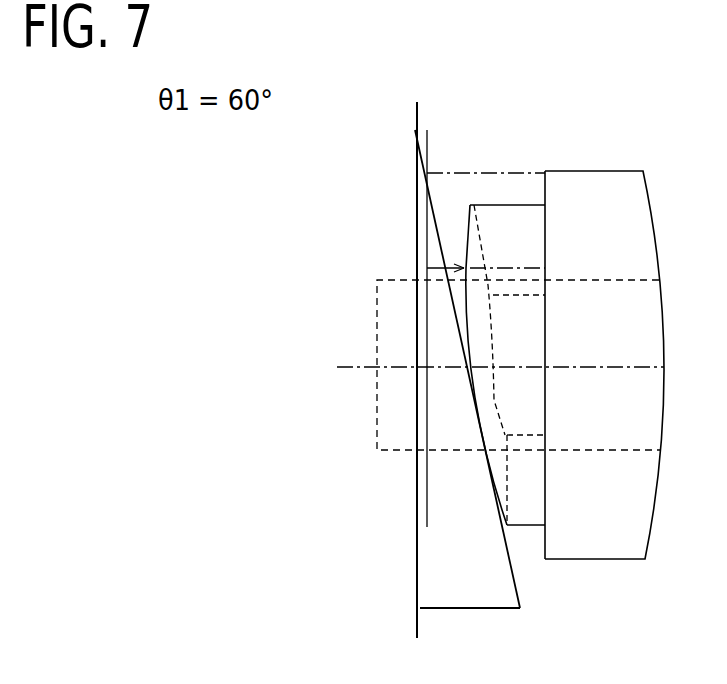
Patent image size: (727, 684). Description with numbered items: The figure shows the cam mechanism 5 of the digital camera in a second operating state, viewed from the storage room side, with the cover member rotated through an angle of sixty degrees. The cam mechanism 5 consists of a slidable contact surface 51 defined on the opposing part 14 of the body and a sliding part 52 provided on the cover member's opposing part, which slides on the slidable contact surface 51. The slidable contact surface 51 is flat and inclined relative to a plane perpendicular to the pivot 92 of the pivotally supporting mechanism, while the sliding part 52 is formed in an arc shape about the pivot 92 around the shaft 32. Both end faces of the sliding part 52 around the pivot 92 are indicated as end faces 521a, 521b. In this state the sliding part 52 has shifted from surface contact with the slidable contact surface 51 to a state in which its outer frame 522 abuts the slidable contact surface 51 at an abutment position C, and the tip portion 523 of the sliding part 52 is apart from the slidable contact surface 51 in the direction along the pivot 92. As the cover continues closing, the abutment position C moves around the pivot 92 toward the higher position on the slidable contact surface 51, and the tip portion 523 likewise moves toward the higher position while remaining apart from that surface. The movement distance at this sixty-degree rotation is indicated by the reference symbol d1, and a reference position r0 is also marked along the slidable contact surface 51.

The cam mechanism 5 is at (530, 71).
The slidable contact surface 51 is at (435, 203).
The sliding part 52 is at (497, 205).
The end face of the sliding part 521a is at (511, 232).
The end face of the sliding part 521b is at (525, 498).
The outer frame 522 is at (465, 308).
The tip portion 523 is at (466, 267).
The shaft 32 is at (393, 455).
The pivot 92 is at (358, 368).
The opposing part 14 is at (421, 627).
The reference radius r0 is at (426, 173).
The movement distance d1 is at (427, 268).
The abutment position C is at (483, 452).